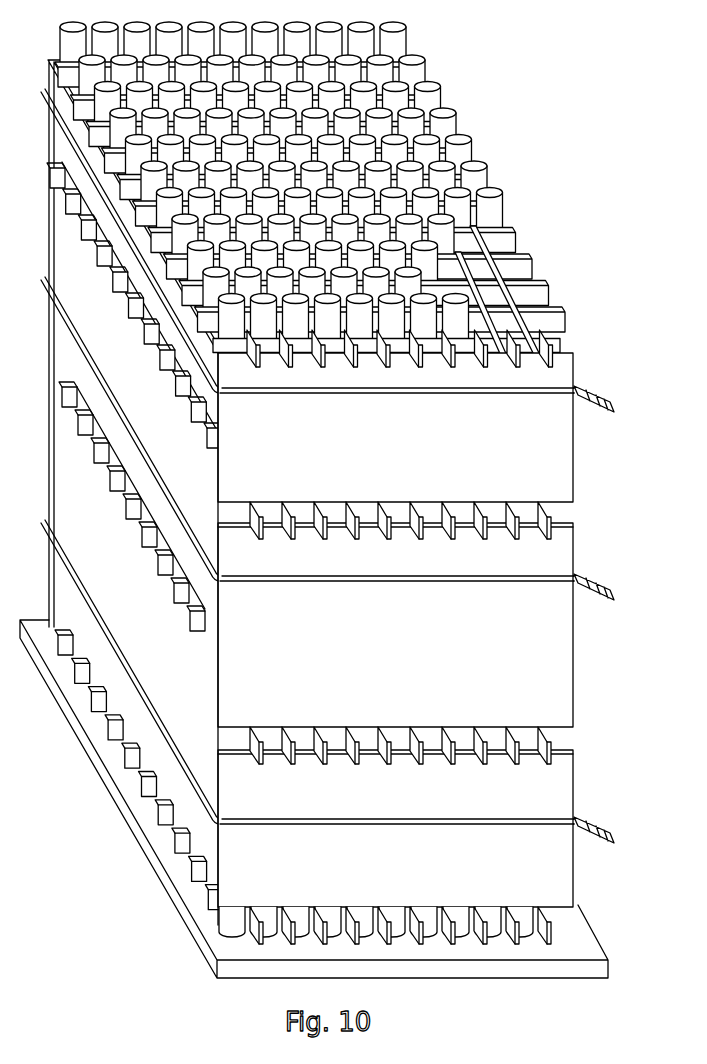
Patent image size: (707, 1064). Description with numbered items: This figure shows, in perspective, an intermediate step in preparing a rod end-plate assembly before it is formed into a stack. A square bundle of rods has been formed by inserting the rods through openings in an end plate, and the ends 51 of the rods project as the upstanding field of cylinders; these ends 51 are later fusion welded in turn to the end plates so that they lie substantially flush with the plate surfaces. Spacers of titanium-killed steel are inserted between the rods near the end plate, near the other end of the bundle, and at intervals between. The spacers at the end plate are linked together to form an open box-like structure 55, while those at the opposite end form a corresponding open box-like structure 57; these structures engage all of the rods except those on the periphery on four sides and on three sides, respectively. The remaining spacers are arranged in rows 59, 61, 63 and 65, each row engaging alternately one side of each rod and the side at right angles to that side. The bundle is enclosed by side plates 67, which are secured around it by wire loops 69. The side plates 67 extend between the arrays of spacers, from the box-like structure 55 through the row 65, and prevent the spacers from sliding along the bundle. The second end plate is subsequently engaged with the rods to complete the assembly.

The rod ends 51 is at (445, 116).
The open box-like structure 55 is at (140, 792).
The open box-like structure 57 is at (332, 193).
The row of spacers 59 is at (160, 358).
The row of spacers 61 is at (500, 530).
The row of spacers 63 is at (160, 567).
The row of spacers 65 is at (478, 765).
The side plates 67 is at (570, 864).
The wire loops 69 is at (593, 406).